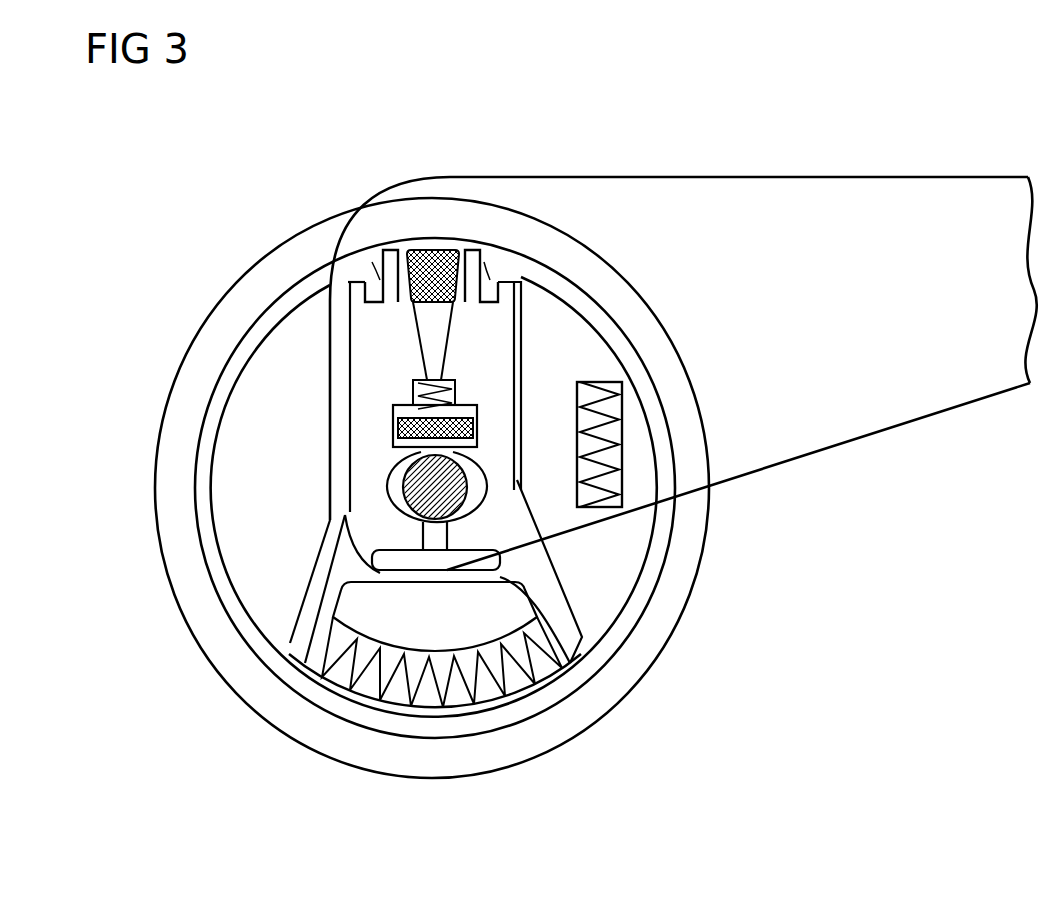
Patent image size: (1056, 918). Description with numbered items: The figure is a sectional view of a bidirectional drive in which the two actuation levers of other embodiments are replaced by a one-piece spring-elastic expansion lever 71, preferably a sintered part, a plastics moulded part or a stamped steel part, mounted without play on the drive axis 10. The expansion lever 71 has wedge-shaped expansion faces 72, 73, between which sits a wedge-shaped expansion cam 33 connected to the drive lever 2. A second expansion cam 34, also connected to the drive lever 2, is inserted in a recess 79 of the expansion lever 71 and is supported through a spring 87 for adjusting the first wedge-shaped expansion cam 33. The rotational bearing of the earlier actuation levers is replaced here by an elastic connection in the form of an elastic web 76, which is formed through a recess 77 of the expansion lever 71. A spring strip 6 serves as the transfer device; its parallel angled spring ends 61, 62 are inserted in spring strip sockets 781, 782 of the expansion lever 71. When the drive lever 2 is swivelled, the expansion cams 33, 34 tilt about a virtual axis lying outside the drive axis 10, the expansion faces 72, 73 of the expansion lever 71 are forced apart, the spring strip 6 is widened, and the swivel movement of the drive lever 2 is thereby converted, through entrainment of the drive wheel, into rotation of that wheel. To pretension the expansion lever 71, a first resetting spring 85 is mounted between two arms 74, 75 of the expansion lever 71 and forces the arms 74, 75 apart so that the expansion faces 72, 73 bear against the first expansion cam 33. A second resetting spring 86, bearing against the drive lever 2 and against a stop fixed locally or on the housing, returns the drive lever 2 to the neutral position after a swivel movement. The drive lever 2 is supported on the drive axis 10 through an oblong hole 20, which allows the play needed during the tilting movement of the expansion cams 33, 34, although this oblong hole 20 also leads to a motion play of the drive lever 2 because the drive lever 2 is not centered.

The drive lever 2 is at (845, 415).
The spring strip 6 is at (200, 488).
The drive axis 10 is at (453, 480).
The oblong hole 20 is at (380, 495).
The wedge-shaped expansion cam 33 is at (434, 248).
The second expansion cam 34 is at (397, 427).
The spring end 61 is at (373, 280).
The spring end 62 is at (487, 273).
The expansion lever 71 is at (498, 417).
The wedge-shaped expansion face 72 is at (410, 325).
The wedge-shaped expansion face 73 is at (453, 337).
The arm 74 is at (317, 610).
The arm 75 is at (558, 608).
The elastic web 76 is at (440, 573).
The recess 77 is at (397, 557).
The recess 79 is at (397, 410).
The first resetting spring 85 is at (453, 683).
The second resetting spring 86 is at (623, 430).
The spring 87 is at (447, 397).
The spring strip socket 781 is at (363, 303).
The spring strip socket 782 is at (478, 248).